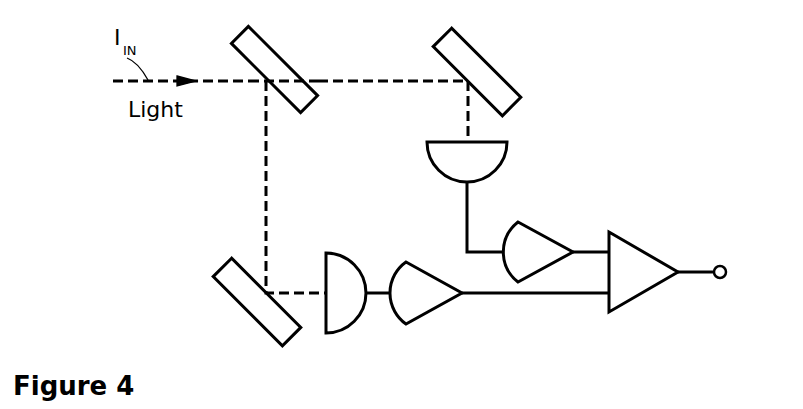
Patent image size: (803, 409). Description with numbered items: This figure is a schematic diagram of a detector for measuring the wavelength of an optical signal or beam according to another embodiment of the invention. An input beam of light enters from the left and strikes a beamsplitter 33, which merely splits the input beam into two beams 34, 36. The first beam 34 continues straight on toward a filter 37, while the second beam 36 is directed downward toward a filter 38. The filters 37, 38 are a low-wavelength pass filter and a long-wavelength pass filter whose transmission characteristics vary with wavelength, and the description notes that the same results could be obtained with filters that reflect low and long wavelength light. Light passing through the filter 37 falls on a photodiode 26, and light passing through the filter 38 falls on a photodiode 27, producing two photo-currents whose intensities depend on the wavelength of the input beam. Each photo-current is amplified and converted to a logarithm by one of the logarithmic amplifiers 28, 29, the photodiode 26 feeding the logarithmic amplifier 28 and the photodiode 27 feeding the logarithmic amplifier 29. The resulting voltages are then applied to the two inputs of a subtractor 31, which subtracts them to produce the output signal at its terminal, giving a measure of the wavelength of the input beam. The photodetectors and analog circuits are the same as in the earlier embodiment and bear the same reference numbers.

The photodiode 26 is at (497, 151).
The photodiode 27 is at (340, 263).
The logarithmic amplifier 28 is at (518, 250).
The logarithmic amplifier 29 is at (427, 297).
The subtractor 31 is at (633, 279).
The beamsplitter 33 is at (268, 53).
The beam 34 is at (345, 80).
The beam 36 is at (266, 183).
The filter 37 is at (463, 60).
The filter 38 is at (250, 307).